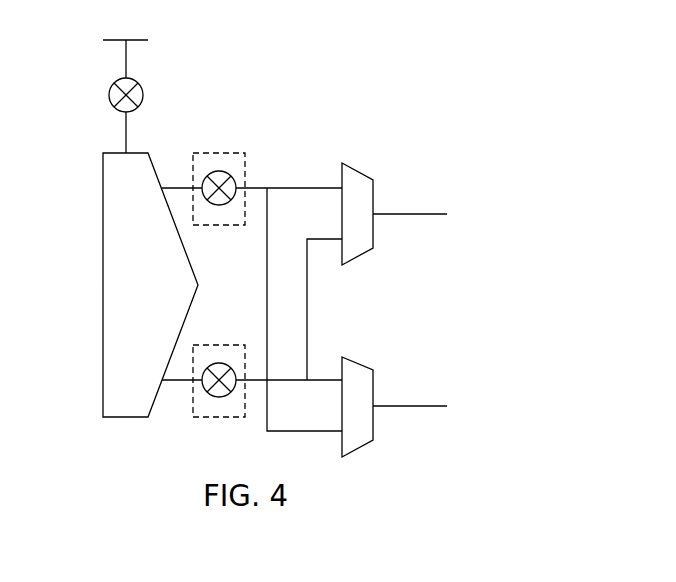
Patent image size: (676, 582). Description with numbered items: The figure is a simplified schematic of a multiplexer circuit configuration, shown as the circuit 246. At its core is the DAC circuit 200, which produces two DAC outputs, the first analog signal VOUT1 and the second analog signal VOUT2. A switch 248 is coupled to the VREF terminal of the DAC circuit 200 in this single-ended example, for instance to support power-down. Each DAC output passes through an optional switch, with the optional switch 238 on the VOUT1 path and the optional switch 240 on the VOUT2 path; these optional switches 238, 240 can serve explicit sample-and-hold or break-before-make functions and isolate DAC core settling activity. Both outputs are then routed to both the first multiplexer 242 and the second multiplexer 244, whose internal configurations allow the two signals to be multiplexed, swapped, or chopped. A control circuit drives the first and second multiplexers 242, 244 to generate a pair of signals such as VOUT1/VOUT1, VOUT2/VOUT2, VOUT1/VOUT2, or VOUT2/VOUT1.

The DAC circuit 200 is at (103, 283).
The optional switch 238 is at (219, 170).
The optional switch 240 is at (219, 362).
The first multiplexer 242 is at (360, 172).
The second multiplexer 244 is at (360, 364).
The circuit 246 is at (356, 52).
The switch 248 is at (107, 92).